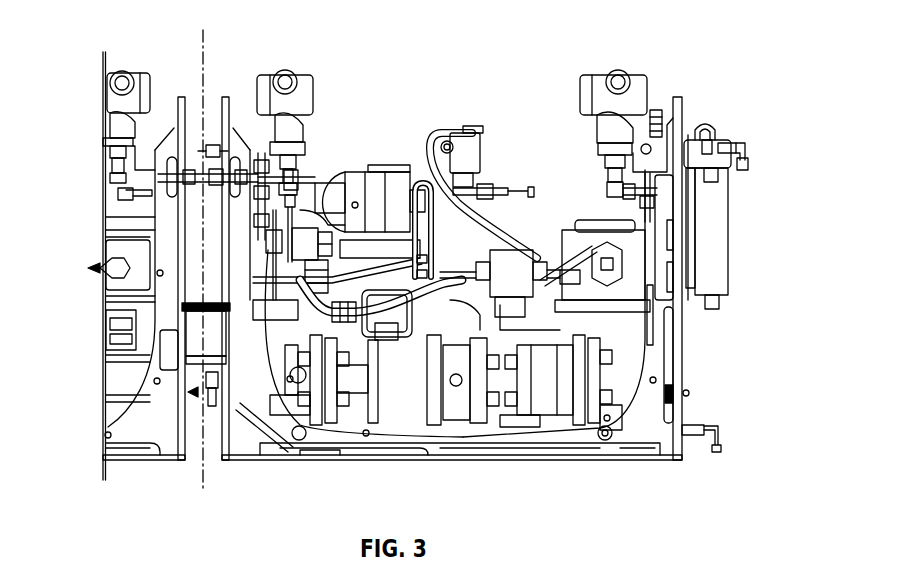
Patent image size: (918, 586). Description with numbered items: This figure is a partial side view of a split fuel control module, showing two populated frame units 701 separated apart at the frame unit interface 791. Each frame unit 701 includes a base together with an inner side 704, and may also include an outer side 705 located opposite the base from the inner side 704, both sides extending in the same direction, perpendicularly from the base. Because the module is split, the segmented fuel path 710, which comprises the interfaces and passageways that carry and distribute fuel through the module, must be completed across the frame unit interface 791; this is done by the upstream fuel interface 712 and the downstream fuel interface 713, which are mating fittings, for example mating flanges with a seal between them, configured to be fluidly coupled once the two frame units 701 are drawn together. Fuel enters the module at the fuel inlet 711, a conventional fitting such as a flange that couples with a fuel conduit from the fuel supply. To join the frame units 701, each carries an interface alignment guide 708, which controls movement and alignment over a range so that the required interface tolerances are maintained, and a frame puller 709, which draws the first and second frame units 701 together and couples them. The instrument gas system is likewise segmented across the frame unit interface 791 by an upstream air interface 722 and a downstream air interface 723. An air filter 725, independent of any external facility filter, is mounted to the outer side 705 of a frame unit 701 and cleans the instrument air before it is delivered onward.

The frame unit 701 is at (138, 467).
The inner side 704 is at (178, 458).
The outer side 705 is at (680, 418).
The interface alignment guide 708 is at (193, 363).
The frame puller 709 is at (193, 303).
The segmented fuel path 710 is at (392, 393).
The fuel inlet 711 is at (598, 367).
The upstream fuel interface 712 is at (210, 378).
The downstream fuel interface 713 is at (292, 447).
The upstream air interface 722 is at (243, 172).
The downstream air interface 723 is at (187, 177).
The air filter 725 is at (718, 232).
The frame unit interface 791 is at (201, 62).